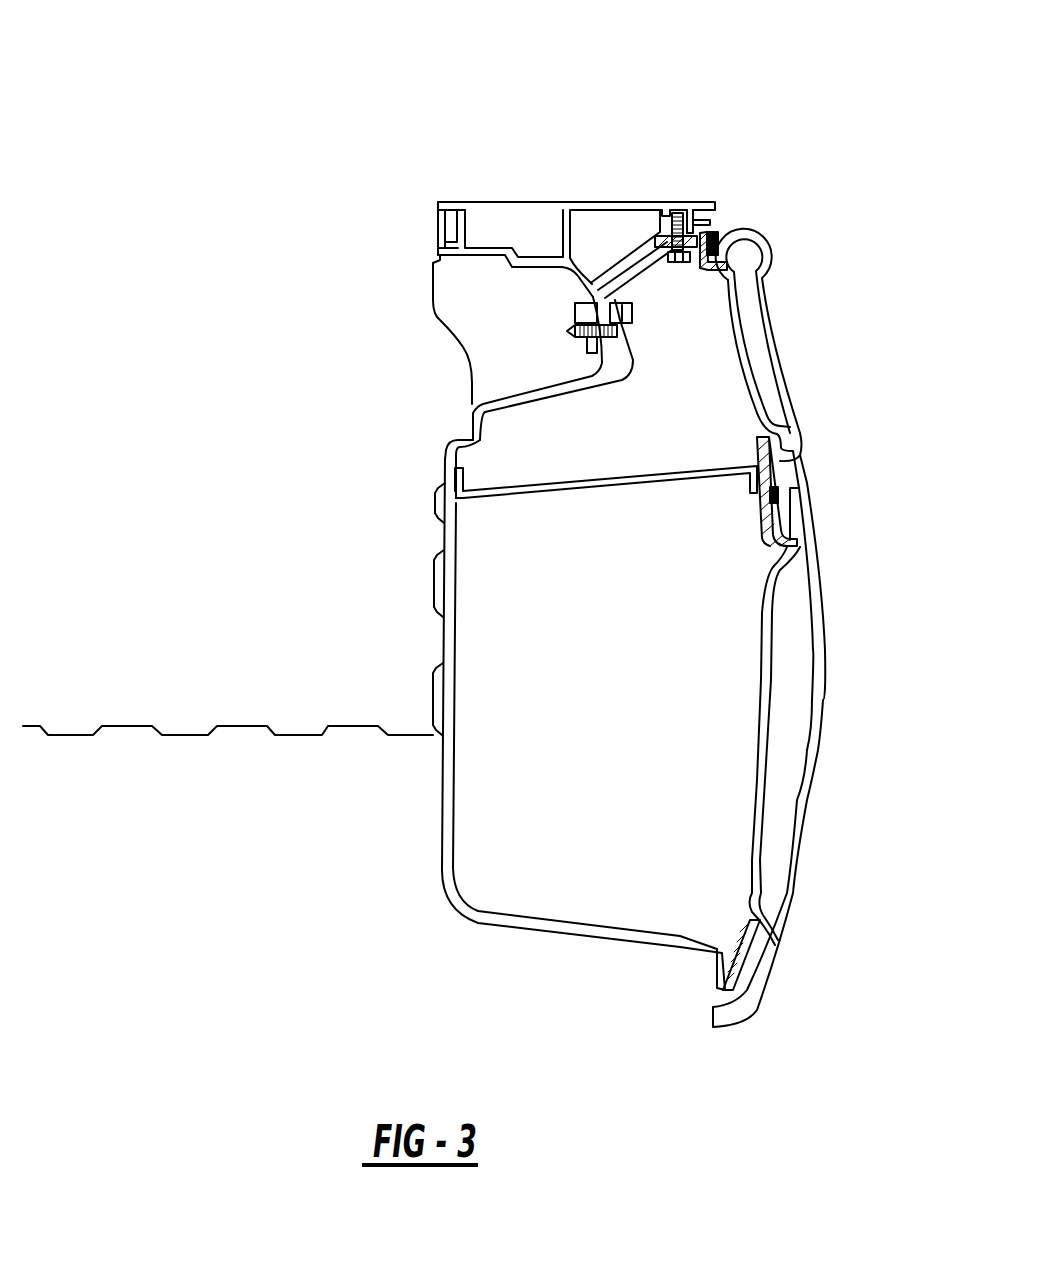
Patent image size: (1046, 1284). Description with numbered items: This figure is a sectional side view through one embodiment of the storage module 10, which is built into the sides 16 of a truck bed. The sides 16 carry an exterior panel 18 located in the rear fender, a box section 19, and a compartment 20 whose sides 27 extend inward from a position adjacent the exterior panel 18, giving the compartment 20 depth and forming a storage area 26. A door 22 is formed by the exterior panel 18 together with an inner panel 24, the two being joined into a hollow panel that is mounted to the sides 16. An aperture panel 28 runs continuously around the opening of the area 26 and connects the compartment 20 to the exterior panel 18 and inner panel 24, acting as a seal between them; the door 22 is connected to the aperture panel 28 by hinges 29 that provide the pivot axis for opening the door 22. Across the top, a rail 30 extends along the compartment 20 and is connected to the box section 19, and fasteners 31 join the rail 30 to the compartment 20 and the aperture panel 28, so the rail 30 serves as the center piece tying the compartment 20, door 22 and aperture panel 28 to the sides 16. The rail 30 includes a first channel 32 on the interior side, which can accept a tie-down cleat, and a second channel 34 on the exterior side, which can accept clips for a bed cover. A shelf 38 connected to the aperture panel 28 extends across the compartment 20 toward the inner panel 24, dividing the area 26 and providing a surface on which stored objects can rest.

The storage module 10 is at (683, 76).
The sides 16 is at (422, 277).
The exterior panel 18 is at (778, 340).
The box section 19 is at (470, 387).
The compartment 20 is at (438, 537).
The door 22 is at (777, 294).
The inner panel 24 is at (757, 378).
The area 26 is at (513, 743).
The sides 27 is at (618, 272).
The aperture panel 28 is at (758, 270).
The hinge 29 is at (728, 250).
The rail 30 is at (503, 201).
The fasteners 31 is at (683, 212).
The first channel 32 is at (438, 218).
The second channel 34 is at (711, 208).
The shelf 38 is at (626, 472).